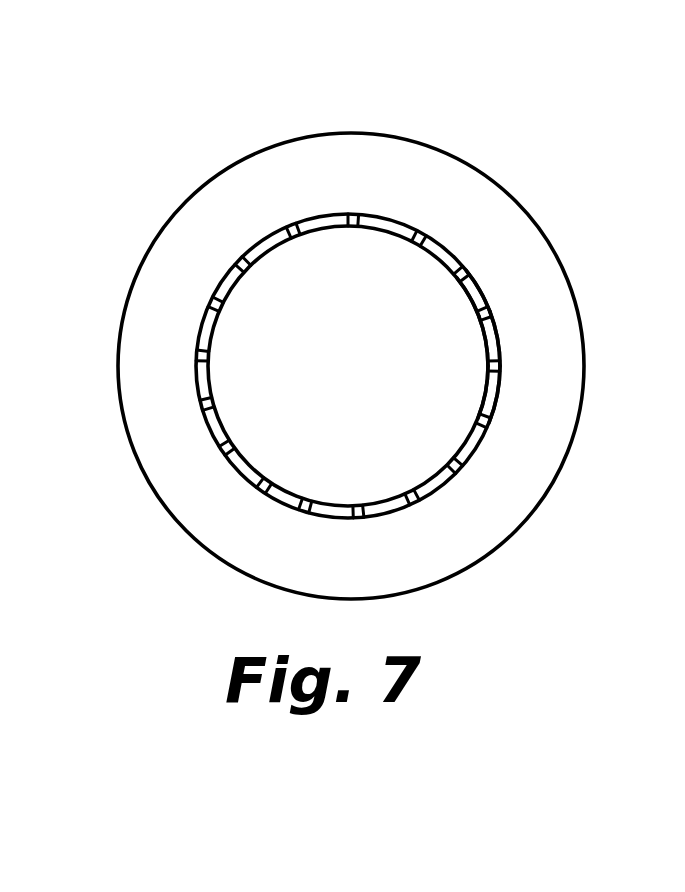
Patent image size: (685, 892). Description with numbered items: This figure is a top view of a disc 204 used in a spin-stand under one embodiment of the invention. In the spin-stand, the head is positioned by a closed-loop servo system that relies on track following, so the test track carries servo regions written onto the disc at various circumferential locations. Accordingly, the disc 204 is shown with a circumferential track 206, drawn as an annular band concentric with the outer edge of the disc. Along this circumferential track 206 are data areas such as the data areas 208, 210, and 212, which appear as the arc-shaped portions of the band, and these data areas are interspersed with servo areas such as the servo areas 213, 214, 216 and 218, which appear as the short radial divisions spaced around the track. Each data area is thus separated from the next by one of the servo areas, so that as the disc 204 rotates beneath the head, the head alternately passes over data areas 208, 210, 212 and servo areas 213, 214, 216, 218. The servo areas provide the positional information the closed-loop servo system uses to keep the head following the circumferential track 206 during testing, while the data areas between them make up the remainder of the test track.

The disc 204 is at (384, 134).
The circumferential track 206 is at (452, 244).
The servo area 213 is at (470, 268).
The data area 208 is at (487, 295).
The data area 210 is at (500, 340).
The data area 212 is at (495, 414).
The servo area 214 is at (484, 316).
The servo area 216 is at (488, 371).
The servo area 218 is at (492, 426).